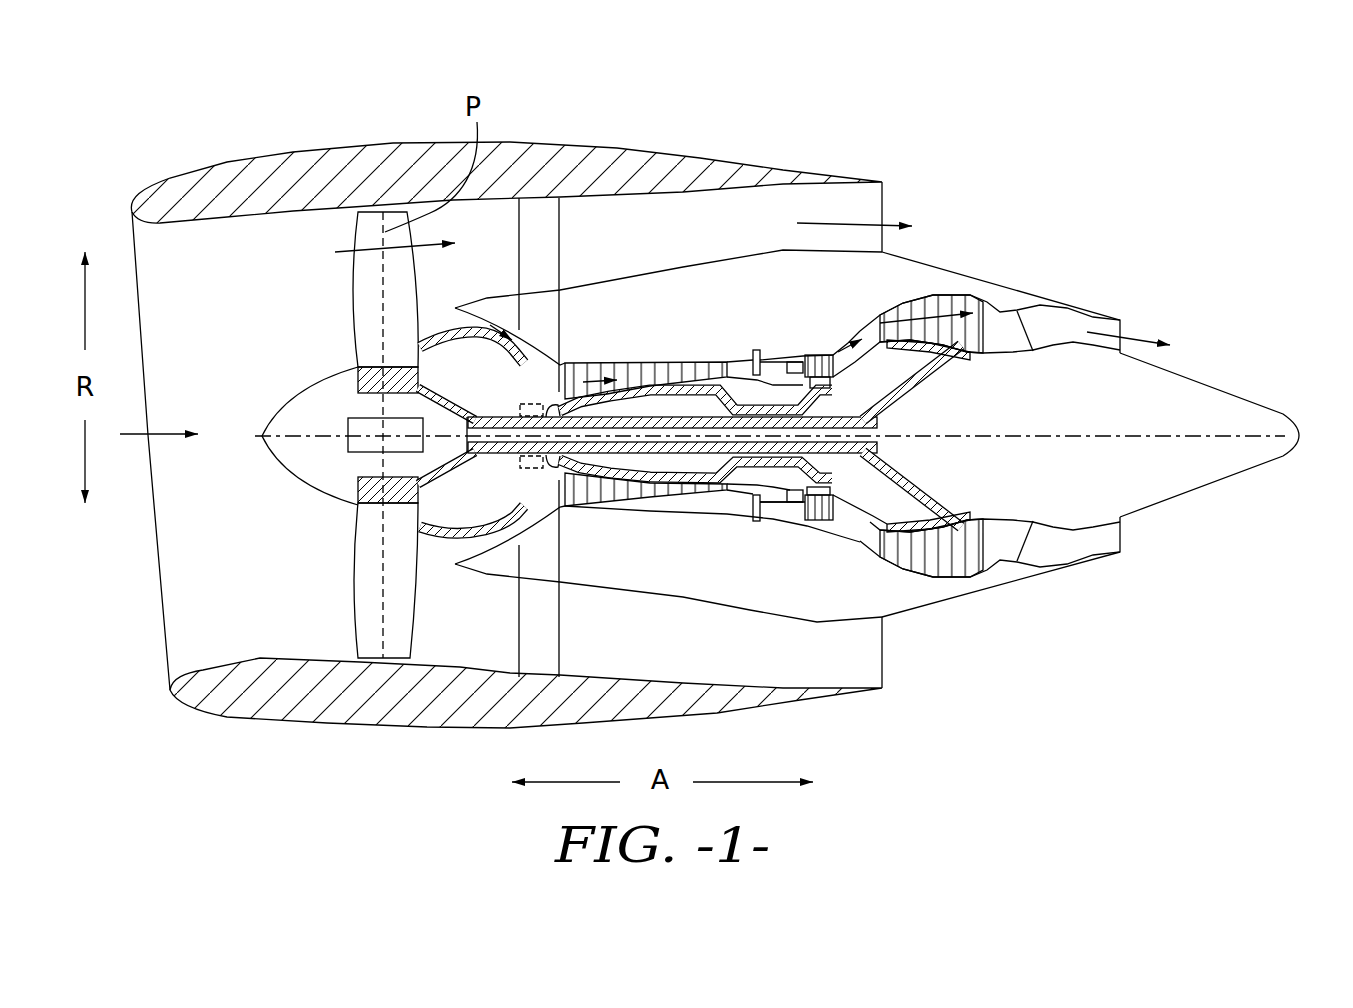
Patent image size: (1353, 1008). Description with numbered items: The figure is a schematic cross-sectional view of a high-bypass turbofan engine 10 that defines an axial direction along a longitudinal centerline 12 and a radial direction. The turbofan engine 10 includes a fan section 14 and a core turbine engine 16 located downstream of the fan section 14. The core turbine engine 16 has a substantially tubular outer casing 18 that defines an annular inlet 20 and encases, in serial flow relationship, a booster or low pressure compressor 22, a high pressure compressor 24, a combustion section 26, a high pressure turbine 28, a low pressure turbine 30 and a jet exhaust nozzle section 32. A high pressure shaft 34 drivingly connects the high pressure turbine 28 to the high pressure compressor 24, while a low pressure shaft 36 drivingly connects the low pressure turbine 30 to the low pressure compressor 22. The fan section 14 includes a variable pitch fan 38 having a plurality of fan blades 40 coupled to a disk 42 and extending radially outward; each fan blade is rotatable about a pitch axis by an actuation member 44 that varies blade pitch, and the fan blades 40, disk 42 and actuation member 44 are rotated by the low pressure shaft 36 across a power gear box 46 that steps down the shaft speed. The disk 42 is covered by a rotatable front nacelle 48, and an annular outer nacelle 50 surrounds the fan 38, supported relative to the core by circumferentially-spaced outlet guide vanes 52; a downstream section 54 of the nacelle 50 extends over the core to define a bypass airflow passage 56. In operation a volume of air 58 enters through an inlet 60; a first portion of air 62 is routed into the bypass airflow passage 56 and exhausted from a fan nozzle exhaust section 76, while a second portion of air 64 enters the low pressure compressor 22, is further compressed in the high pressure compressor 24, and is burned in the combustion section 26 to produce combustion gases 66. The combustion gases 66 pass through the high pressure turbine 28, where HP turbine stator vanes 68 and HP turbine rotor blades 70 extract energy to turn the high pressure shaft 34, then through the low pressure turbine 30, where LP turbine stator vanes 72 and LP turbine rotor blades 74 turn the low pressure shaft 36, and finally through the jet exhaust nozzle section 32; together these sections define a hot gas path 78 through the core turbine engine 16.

The turbofan engine 10 is at (1107, 208).
The longitudinal centerline 12 is at (1043, 430).
The fan section 14 is at (428, 130).
The core turbine engine 16 is at (718, 315).
The outer casing 18 is at (737, 610).
The annular inlet 20 is at (455, 548).
The low pressure compressor 22 is at (522, 523).
The high pressure compressor 24 is at (590, 507).
The combustion section 26 is at (770, 503).
The high pressure turbine 28 is at (840, 506).
The low pressure turbine 30 is at (973, 580).
The jet exhaust nozzle section 32 is at (1123, 322).
The high pressure shaft 34 is at (820, 387).
The low pressure shaft 36 is at (503, 410).
The variable pitch fan 38 is at (342, 291).
The fan blades 40 is at (355, 607).
The disk 42 is at (353, 378).
The actuation member 44 is at (347, 440).
The power gear box 46 is at (533, 404).
The rotatable front nacelle 48 is at (287, 408).
The outer nacelle 50 is at (420, 727).
The outlet guide vanes 52 is at (560, 218).
The downstream section 54 is at (712, 150).
The bypass airflow passage 56 is at (696, 239).
The volume of air 58 is at (163, 428).
The inlet 60 is at (163, 648).
The first portion of air 62 is at (370, 253).
The second portion of air 64 is at (440, 322).
The combustion gases 66 is at (915, 290).
The HP turbine stator vanes 68 is at (813, 507).
The HP turbine rotor blades 70 is at (830, 522).
The LP turbine stator vanes 72 is at (887, 550).
The LP turbine rotor blades 74 is at (897, 557).
The fan nozzle exhaust section 76 is at (884, 202).
The hot gas path 78 is at (868, 325).